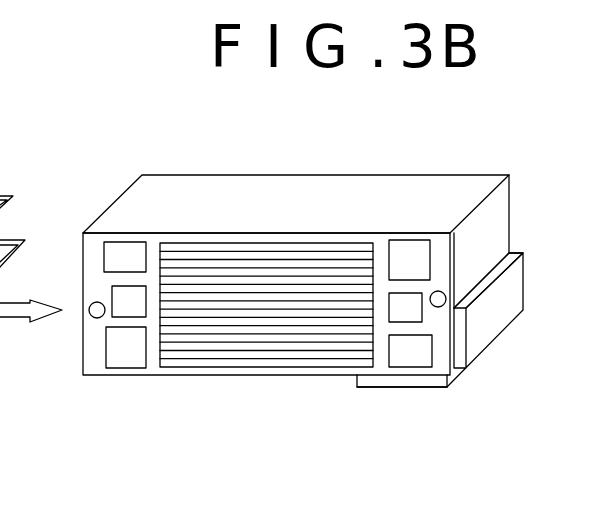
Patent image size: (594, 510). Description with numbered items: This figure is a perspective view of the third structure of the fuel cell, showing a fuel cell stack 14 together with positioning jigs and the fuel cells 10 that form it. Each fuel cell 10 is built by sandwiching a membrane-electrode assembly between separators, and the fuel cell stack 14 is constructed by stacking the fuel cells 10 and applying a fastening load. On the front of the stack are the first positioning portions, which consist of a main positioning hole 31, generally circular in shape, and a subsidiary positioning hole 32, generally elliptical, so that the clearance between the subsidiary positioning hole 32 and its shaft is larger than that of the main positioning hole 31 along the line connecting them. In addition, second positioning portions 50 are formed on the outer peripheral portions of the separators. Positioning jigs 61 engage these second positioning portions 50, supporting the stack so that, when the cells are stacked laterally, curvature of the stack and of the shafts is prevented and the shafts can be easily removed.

The fuel cell 10 is at (196, 375).
The fuel cell stack 14 is at (217, 175).
The main positioning hole 31 is at (89, 308).
The subsidiary positioning hole 32 is at (437, 291).
The second positioning portion 50 is at (454, 335).
The positioning jig 61 is at (510, 273).